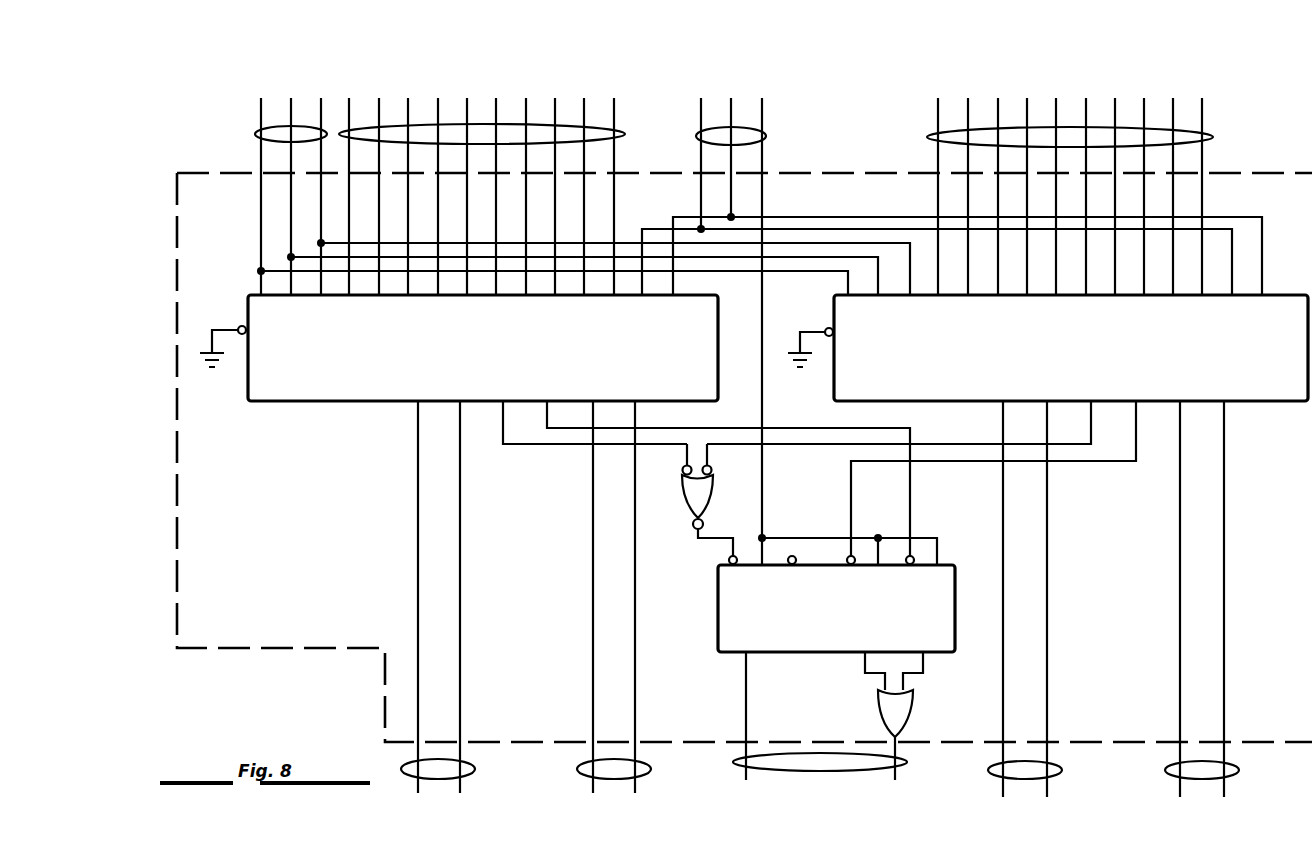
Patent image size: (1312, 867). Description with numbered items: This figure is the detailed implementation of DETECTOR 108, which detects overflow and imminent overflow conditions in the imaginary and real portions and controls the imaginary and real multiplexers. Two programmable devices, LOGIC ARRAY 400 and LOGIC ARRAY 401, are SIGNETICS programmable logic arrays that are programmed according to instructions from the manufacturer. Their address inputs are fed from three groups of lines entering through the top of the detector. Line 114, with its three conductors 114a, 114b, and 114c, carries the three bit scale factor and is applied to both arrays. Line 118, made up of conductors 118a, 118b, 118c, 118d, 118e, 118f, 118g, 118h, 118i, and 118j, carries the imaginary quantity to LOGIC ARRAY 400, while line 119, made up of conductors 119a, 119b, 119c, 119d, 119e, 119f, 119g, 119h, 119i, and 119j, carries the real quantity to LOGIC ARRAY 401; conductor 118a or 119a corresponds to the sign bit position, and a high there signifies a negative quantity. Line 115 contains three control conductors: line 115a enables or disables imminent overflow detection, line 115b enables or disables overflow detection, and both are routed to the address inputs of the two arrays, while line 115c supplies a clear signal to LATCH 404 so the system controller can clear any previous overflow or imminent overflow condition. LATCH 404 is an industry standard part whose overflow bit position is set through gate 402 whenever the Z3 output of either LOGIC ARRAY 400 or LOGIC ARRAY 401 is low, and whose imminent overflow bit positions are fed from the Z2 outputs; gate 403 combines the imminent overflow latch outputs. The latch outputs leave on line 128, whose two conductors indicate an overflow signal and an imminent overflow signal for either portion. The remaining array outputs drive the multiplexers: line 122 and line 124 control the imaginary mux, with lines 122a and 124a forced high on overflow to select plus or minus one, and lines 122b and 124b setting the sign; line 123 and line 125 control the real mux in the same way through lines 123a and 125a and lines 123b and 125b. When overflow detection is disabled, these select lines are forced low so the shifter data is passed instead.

The DETECTOR 108 is at (242, 648).
The line 114 is at (255, 134).
The line 114a is at (321, 110).
The line 114b is at (291, 110).
The line 114c is at (261, 110).
The line 118 is at (625, 134).
The conductor 118a is at (349, 110).
The conductor 118b is at (379, 110).
The conductor 118c is at (408, 110).
The conductor 118d is at (438, 110).
The conductor 118e is at (467, 110).
The conductor 118f is at (496, 110).
The conductor 118g is at (526, 110).
The conductor 118h is at (555, 110).
The conductor 118i is at (584, 110).
The conductor 118j is at (614, 110).
The line 115 is at (766, 136).
The line 115a is at (701, 110).
The line 115b is at (731, 110).
The line 115c is at (762, 110).
The line 119 is at (1213, 137).
The conductor 119a is at (938, 110).
The conductor 119b is at (968, 110).
The conductor 119c is at (998, 110).
The conductor 119d is at (1027, 110).
The conductor 119e is at (1056, 110).
The conductor 119f is at (1086, 110).
The conductor 119g is at (1115, 110).
The conductor 119h is at (1144, 110).
The conductor 119i is at (1173, 110).
The conductor 119j is at (1202, 110).
The LOGIC ARRAY 400 is at (307, 401).
The LOGIC ARRAY 401 is at (1263, 401).
The gate 402 is at (680, 503).
The gate 403 is at (878, 702).
The LATCH 404 is at (718, 620).
The line 122 is at (475, 769).
The line 122a is at (418, 562).
The line 122b is at (460, 562).
The line 124 is at (578, 770).
The line 124a is at (635, 714).
The line 124b is at (593, 714).
The line 128 is at (733, 762).
The line 123 is at (1062, 770).
The line 123a is at (1003, 695).
The line 123b is at (1047, 695).
The line 125 is at (1239, 770).
The line 125a is at (1224, 587).
The line 125b is at (1180, 587).